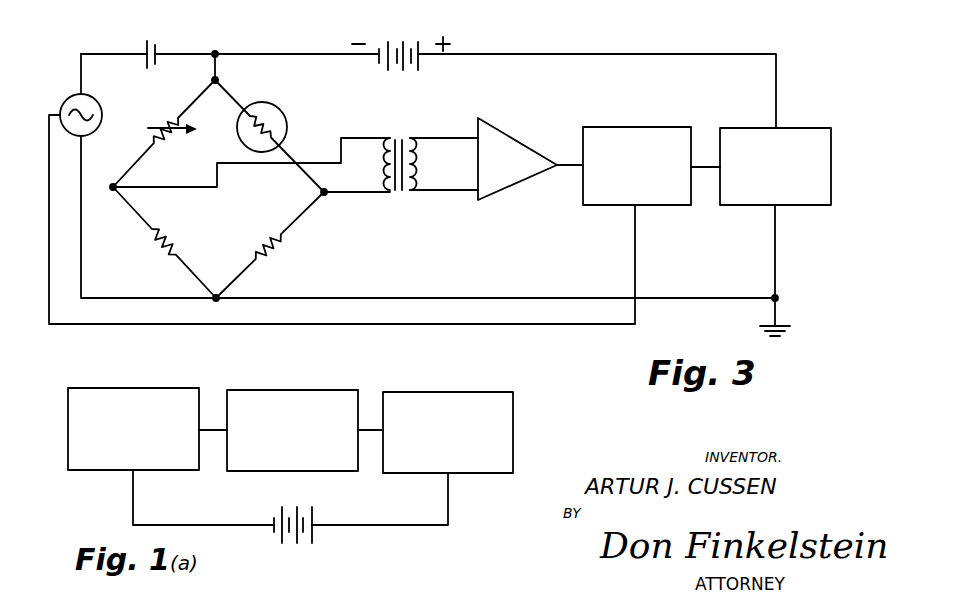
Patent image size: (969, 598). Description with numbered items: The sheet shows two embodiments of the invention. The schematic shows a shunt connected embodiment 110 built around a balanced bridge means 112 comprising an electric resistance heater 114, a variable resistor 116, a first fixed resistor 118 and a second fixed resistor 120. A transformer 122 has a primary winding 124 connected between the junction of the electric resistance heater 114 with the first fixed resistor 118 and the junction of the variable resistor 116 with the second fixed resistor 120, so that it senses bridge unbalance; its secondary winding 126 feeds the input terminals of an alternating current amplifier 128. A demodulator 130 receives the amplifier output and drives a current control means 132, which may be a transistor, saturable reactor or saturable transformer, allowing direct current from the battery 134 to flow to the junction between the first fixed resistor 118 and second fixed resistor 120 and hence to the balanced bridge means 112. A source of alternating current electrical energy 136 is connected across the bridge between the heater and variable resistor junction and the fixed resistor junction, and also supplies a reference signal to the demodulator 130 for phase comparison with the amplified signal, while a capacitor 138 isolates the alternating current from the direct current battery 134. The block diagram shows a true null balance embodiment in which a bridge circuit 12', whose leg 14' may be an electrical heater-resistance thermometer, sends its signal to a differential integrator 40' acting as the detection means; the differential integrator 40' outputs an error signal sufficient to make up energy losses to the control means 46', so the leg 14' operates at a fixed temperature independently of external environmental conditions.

In FIG. 3, the shunt connected embodiment 110 is at (646, 30).
In FIG. 3, the balanced bridge means 112 is at (250, 176).
In FIG. 3, the electric resistance heater 114 is at (241, 104).
In FIG. 3, the variable resistor 116 is at (175, 120).
In FIG. 3, the first fixed resistor 118 is at (275, 253).
In FIG. 3, the second fixed resistor 120 is at (164, 252).
In FIG. 3, the transformer 122 is at (416, 162).
In FIG. 3, the primary winding 124 is at (369, 193).
In FIG. 3, the secondary winding 126 is at (416, 193).
In FIG. 3, the alternating current amplifier 128 is at (542, 119).
In FIG. 3, the demodulator 130 is at (640, 127).
In FIG. 3, the current control means 132 is at (836, 119).
In FIG. 3, the battery 134 is at (398, 42).
In FIG. 3, the source of alternating current electrical energy 136 is at (86, 96).
In FIG. 3, the capacitor 138 is at (160, 42).
In FIG. 1A, the bridge circuit 12' is at (258, 450).
In FIG. 1A, the leg 14' is at (201, 396).
In FIG. 1A, the differential integrator 40' is at (305, 419).
In FIG. 1A, the control means 46' is at (448, 420).